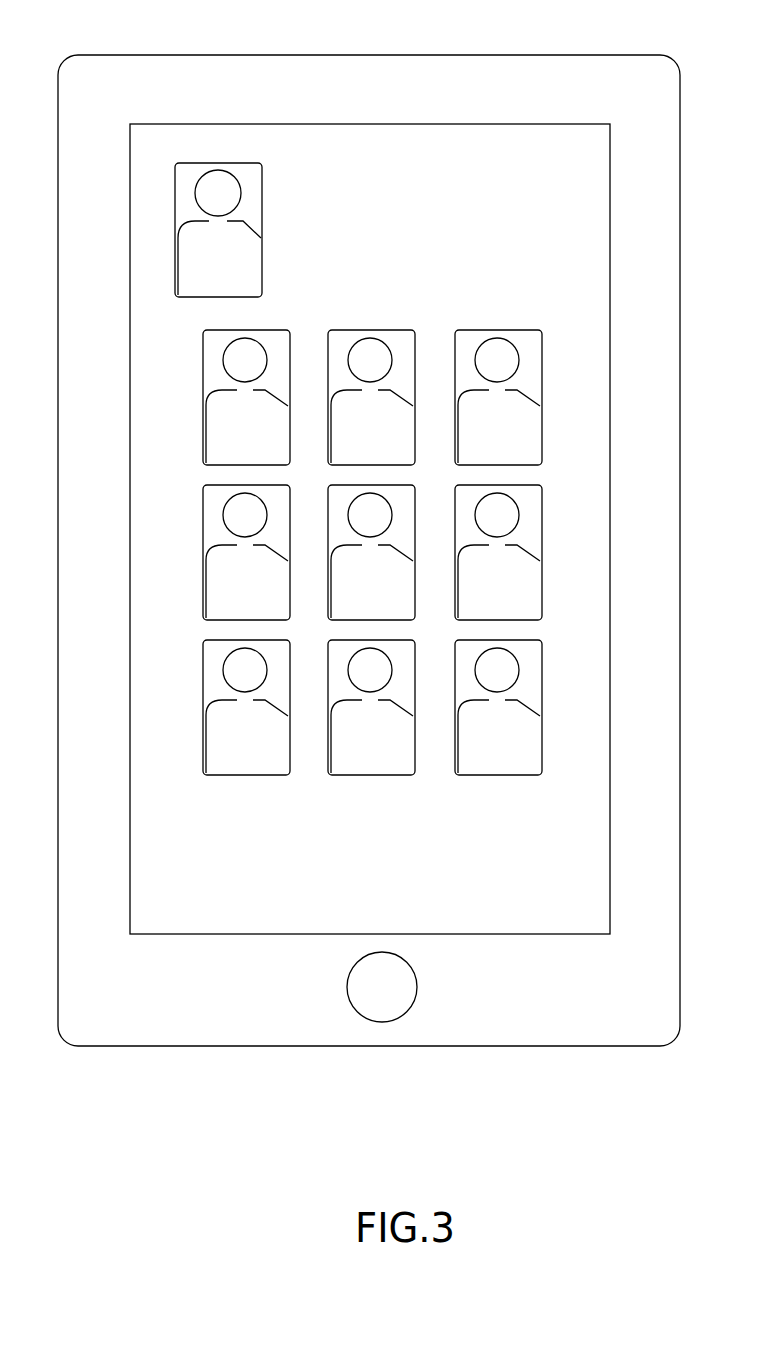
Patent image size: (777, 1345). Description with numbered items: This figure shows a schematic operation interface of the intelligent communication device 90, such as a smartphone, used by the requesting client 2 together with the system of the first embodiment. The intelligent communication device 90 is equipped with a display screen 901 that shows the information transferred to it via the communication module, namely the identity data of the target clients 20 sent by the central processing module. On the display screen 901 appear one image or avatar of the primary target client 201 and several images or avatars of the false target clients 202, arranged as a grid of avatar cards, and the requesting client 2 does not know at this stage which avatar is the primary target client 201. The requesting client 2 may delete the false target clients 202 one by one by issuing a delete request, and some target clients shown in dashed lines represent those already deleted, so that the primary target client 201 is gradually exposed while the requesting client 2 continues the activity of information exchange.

The intelligent communication device 90 is at (572, 92).
The display screen 901 is at (433, 893).
The requesting client 2 is at (243, 244).
The target clients 20 is at (392, 507).
The primary target client 201 is at (258, 360).
The false target clients 202 is at (372, 360).